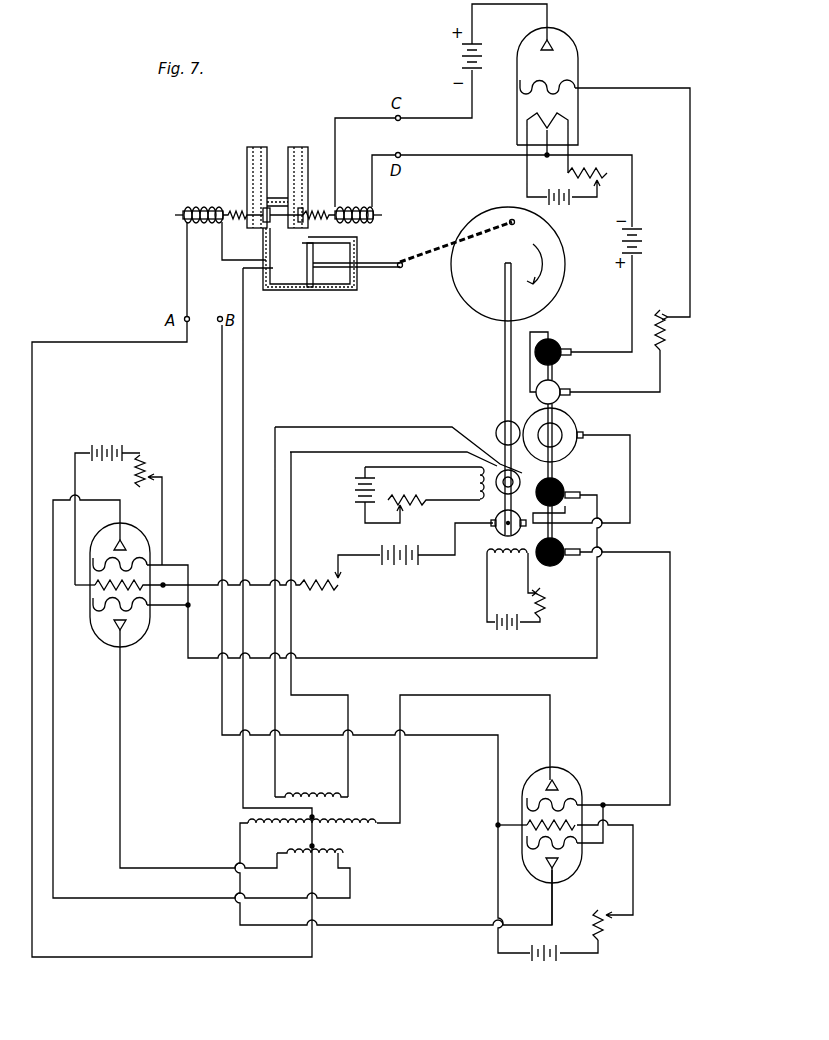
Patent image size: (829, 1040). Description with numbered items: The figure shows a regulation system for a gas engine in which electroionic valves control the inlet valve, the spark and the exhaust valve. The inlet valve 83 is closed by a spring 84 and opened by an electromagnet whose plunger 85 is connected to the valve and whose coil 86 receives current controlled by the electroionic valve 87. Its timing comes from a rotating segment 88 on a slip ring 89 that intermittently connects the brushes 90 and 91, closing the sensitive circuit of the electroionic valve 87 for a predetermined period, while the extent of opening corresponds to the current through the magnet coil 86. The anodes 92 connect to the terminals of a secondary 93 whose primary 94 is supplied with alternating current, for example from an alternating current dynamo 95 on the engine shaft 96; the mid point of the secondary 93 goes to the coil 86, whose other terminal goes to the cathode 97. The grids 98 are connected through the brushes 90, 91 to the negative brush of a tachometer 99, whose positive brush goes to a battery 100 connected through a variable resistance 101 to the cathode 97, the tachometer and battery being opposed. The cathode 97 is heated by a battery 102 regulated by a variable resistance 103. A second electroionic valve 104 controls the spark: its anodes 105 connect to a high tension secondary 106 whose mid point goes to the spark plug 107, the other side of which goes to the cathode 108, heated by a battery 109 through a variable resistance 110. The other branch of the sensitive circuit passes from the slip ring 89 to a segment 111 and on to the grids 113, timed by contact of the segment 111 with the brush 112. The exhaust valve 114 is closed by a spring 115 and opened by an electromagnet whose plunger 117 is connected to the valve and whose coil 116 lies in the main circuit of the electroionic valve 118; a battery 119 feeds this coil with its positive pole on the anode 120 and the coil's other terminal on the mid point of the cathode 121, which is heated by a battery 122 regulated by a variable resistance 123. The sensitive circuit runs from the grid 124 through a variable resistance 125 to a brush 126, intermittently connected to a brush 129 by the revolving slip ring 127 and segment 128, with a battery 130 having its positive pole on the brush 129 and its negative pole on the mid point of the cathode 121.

The inlet valve 83 is at (263, 210).
The spring 84 is at (240, 220).
The plunger 85 is at (178, 222).
The magnet coil 86 is at (198, 206).
The electroionic valve 87 is at (92, 633).
The rotating segment 88 is at (560, 482).
The slip ring 89 is at (502, 422).
The brush 90 is at (580, 493).
The brush 91 is at (578, 432).
The anodes 92 is at (122, 543).
The secondary 93 is at (350, 868).
The primary 94 is at (305, 794).
The alternating current dynamo 95 is at (521, 478).
The engine shaft 96 is at (505, 356).
The cathode 97 is at (95, 588).
The grids 98 is at (140, 562).
The tachometer 99 is at (496, 530).
The battery 100 is at (390, 565).
The variable resistance 101 is at (326, 580).
The battery 102 is at (102, 445).
The variable resistance 103 is at (146, 468).
The electroionic valve 104 is at (575, 778).
The anodes 105 is at (546, 784).
The high tension secondary 106 is at (372, 827).
The spark plug 107 is at (286, 284).
The cathode 108 is at (522, 826).
The battery 109 is at (545, 962).
The variable resistance 110 is at (604, 935).
The segment 111 is at (540, 563).
The brush 112 is at (565, 540).
The grids 113 is at (562, 803).
The exhaust valve 114 is at (303, 206).
The spring 115 is at (315, 210).
The coil 116 is at (350, 207).
The plunger 117 is at (394, 216).
The electroionic valve 118 is at (580, 56).
The battery 119 is at (462, 60).
The anode 120 is at (555, 47).
The cathode 121 is at (527, 118).
The battery 122 is at (562, 205).
The variable resistance 123 is at (600, 190).
The grid 124 is at (565, 86).
The variable resistance 125 is at (670, 338).
The brush 126 is at (558, 386).
The slip ring 127 is at (562, 394).
The segment 128 is at (555, 341).
The brush 129 is at (571, 351).
The battery 130 is at (642, 245).